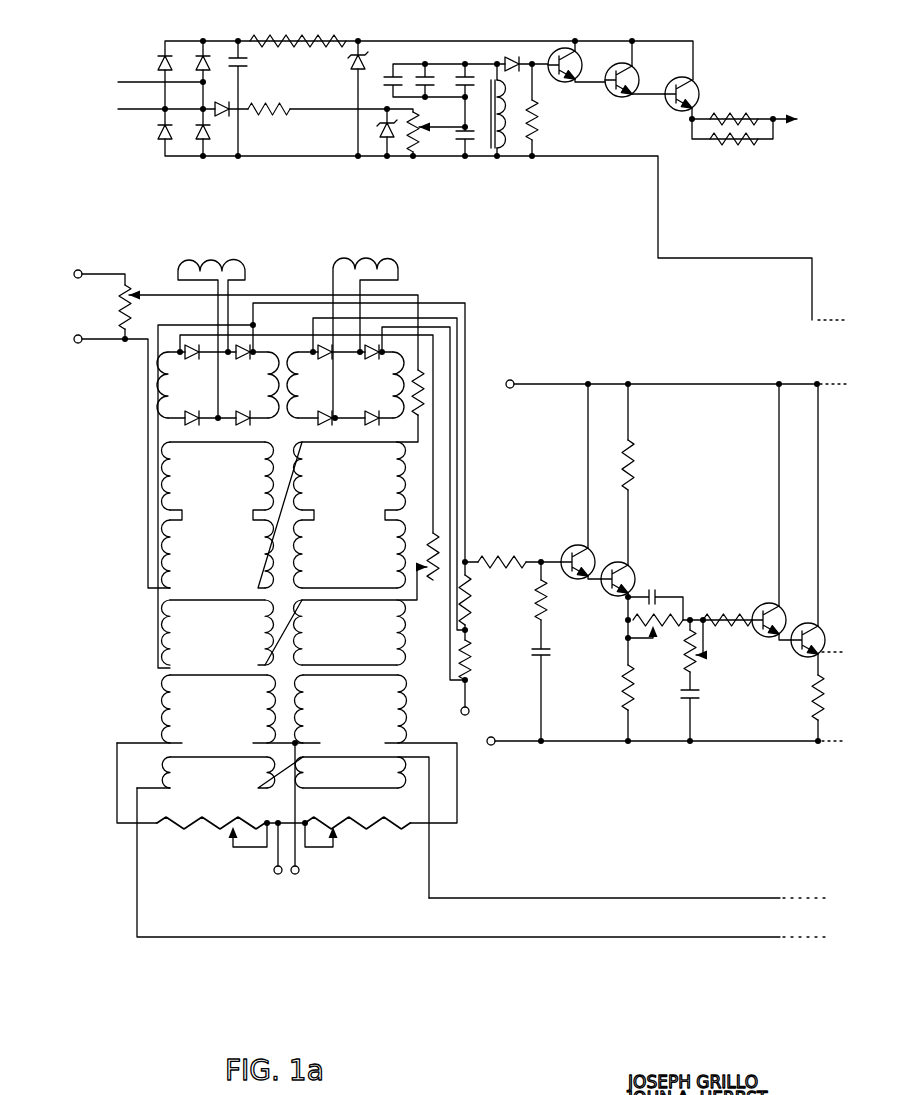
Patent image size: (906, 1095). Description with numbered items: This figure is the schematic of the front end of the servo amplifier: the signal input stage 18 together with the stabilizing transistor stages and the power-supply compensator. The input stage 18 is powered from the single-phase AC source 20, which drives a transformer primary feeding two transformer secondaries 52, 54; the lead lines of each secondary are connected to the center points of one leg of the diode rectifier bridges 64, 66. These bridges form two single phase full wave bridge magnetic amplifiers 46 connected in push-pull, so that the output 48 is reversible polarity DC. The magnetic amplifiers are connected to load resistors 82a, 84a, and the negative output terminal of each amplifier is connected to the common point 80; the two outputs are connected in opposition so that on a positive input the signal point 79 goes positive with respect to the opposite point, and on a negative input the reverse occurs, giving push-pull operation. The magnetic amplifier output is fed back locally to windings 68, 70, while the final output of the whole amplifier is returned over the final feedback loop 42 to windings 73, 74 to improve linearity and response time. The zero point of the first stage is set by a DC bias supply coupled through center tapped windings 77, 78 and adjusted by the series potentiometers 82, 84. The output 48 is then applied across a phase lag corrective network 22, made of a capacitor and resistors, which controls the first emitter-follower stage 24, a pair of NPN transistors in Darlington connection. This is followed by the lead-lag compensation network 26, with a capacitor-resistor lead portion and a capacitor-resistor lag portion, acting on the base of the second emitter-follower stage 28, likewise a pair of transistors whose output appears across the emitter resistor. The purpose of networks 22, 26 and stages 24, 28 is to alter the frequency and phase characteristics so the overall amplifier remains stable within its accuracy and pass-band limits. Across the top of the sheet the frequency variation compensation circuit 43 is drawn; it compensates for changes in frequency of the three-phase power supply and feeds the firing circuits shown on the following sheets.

The input stage 18 is at (106, 560).
The single-phase AC source 20 is at (305, 251).
The corrective network 22 is at (524, 725).
The first emitter-follower stage 24 is at (604, 727).
The compensation network 26 is at (667, 727).
The second emitter-follower stage 28 is at (764, 727).
The final feedback loop 42 is at (483, 862).
The frequency variation compensation circuit 43 is at (323, 86).
The single phase full wave bridge magnetic amplifiers 46 is at (291, 460).
The output 48 is at (527, 639).
The transformer secondary 52 is at (203, 260).
The transformer secondary 54 is at (383, 257).
The diode rectifier bridge 64 is at (245, 394).
The diode rectifier bridge 66 is at (360, 394).
The winding 68 is at (227, 635).
The winding 70 is at (360, 635).
The winding 73 is at (227, 787).
The winding 74 is at (357, 787).
The center tapped winding 77 is at (225, 723).
The center tapped winding 78 is at (357, 723).
The signal point 79 is at (470, 562).
The common point 80 is at (460, 640).
The series potentiometer 82 is at (231, 836).
The series potentiometer 84 is at (336, 836).
The load resistor 82a is at (472, 672).
The load resistor 84a is at (472, 598).